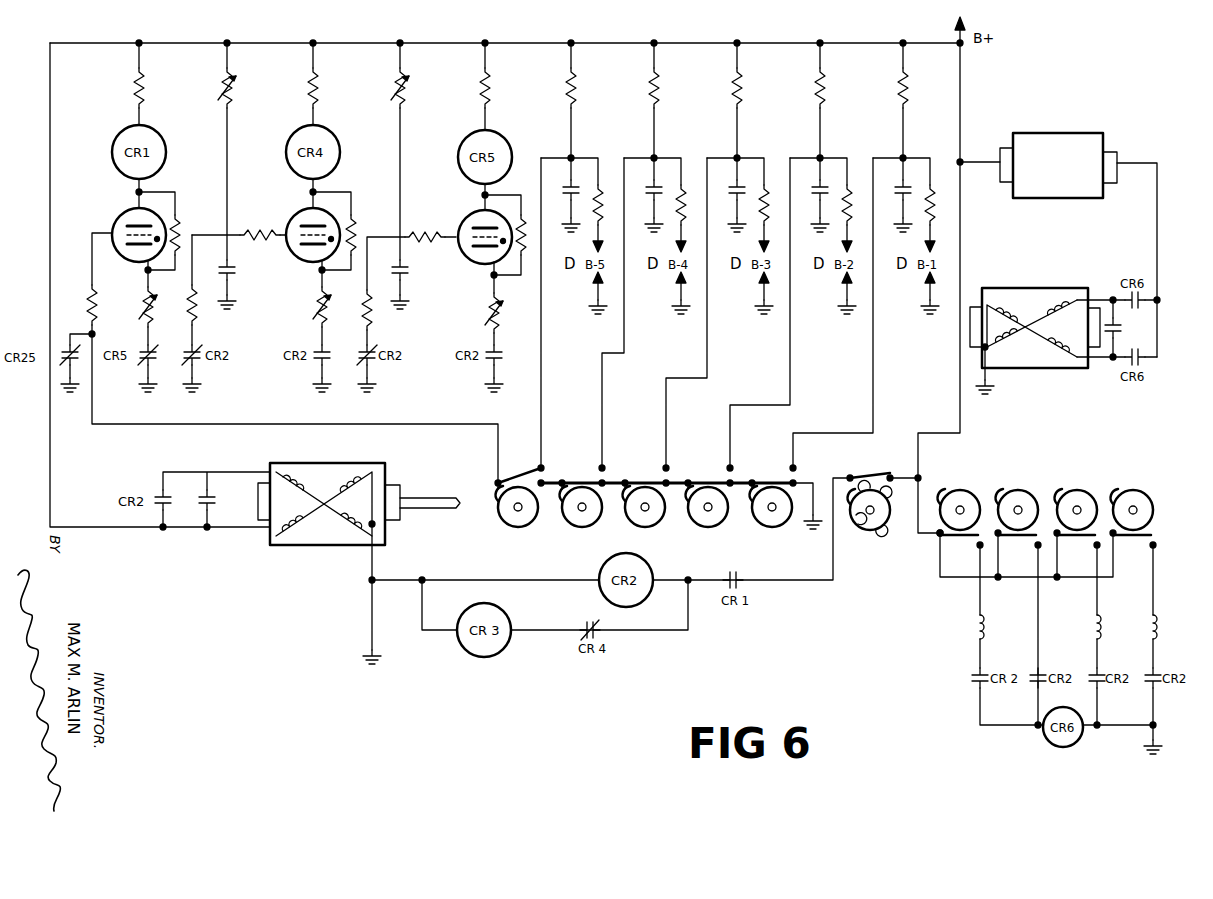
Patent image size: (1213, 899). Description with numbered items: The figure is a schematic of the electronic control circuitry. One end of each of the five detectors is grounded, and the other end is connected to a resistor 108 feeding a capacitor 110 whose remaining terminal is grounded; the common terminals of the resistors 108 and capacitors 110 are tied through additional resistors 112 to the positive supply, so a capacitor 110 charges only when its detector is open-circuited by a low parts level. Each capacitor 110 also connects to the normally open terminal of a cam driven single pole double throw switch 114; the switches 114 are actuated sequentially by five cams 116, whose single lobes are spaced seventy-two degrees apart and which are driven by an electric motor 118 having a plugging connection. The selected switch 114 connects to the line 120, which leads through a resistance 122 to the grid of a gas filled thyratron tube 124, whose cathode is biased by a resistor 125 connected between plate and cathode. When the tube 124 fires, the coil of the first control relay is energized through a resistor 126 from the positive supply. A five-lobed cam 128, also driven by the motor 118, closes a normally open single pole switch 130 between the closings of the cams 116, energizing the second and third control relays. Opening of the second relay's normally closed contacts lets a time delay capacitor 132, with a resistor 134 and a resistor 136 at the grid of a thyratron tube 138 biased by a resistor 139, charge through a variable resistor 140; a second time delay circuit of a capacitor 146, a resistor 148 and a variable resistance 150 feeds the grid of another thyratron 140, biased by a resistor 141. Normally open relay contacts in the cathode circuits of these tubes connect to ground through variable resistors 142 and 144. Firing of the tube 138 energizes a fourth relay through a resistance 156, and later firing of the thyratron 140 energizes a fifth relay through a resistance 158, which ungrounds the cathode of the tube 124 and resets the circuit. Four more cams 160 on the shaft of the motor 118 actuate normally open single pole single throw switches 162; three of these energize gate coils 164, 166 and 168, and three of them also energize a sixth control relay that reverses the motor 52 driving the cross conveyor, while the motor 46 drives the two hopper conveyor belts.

The electric motor 46 is at (1088, 133).
The motor 52 is at (1075, 288).
The resistor 108 is at (944, 158).
The capacitor 110 is at (912, 178).
The resistor 112 is at (917, 76).
The cam driven single pole double throw switch 114 is at (806, 470).
The cam 116 is at (750, 540).
The electric motor 118 is at (298, 545).
The line 120 is at (426, 427).
The resistance 122 is at (94, 292).
The gas filled vacuum tube 124 is at (115, 224).
The resistor 125 is at (178, 209).
The resistor 126 is at (145, 80).
The cam 128 is at (878, 530).
The normally open single pole switch 130 is at (862, 474).
The capacitor 132 is at (236, 272).
The resistor 134 is at (199, 315).
The resistor 136 is at (257, 231).
The thyratron tube 138 is at (298, 213).
The resistor 139 is at (357, 212).
The variable resistor 140 is at (236, 80).
The resistor 141 is at (525, 208).
The variable resistor 142 is at (312, 303).
The variable resistor 144 is at (484, 308).
The capacitor 146 is at (409, 272).
The resistor 148 is at (428, 232).
The variable resistance 150 is at (408, 80).
The resistance 156 is at (320, 80).
The resistance 158 is at (492, 80).
The cam 160 is at (1146, 476).
The single pole single throw normally open switch 162 is at (1129, 550).
The coil 164 is at (984, 631).
The coil 166 is at (1101, 633).
The coil 168 is at (1157, 633).